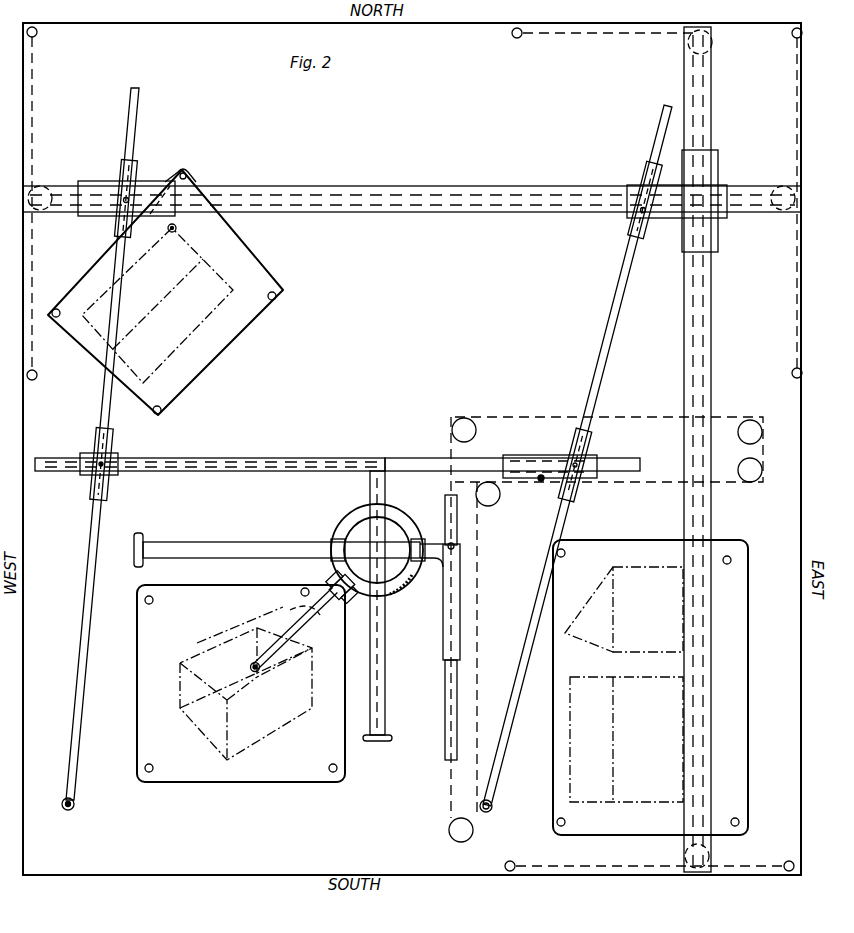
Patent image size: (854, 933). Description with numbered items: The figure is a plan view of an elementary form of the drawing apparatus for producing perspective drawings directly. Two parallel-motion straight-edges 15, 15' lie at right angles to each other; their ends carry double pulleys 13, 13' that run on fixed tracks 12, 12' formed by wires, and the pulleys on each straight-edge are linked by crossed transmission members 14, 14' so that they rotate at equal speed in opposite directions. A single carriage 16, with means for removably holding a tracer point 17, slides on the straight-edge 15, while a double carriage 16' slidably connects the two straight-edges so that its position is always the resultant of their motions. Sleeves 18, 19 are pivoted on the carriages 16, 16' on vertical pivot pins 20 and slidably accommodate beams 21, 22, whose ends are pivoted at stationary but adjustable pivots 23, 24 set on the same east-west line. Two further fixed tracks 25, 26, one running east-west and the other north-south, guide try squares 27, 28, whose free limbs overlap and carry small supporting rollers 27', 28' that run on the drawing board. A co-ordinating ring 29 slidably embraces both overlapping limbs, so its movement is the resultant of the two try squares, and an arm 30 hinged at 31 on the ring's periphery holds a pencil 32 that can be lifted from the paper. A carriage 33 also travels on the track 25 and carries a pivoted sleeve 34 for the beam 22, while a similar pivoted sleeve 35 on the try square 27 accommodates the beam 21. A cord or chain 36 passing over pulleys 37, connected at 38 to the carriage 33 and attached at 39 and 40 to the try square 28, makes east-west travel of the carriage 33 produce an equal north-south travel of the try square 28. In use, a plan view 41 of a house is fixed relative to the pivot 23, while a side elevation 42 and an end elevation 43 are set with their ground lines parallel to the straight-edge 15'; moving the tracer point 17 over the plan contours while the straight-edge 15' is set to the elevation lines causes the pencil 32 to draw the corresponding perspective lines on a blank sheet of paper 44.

The fixed track 12 is at (412, 449).
The fixed track 12' is at (649, 449).
The double pulley 13 is at (411, 196).
The double pulley 13' is at (723, 449).
The transmission member 14 is at (412, 218).
The transmission member 14' is at (725, 450).
The straight-edge 15 is at (412, 186).
The straight-edge 15' is at (717, 449).
The single carriage 16 is at (137, 180).
The double carriage 16' is at (672, 193).
The tracer point 17 is at (178, 226).
The sleeve 18 is at (140, 165).
The sleeve 19 is at (638, 176).
The vertical pivot pin 20 is at (124, 200).
The beam 21 is at (97, 404).
The beam 22 is at (606, 289).
The pivot 23 is at (75, 803).
The pivot 24 is at (493, 804).
The fixed track 25 is at (422, 456).
The fixed track 26 is at (446, 502).
The try square 27 is at (210, 451).
The supporting roller 27' is at (388, 618).
The try square 28 is at (280, 599).
The supporting roller 28' is at (138, 550).
The co-ordinating ring 29 is at (342, 520).
The arm 30 is at (305, 595).
The hinge 31 is at (336, 604).
The pencil 32 is at (250, 667).
The carriage 33 is at (543, 455).
The pivoted sleeve 34 is at (590, 452).
The pivoted sleeve 35 is at (111, 445).
The transmission member 36 is at (540, 417).
The pulley 37 is at (486, 484).
The connection point 38 is at (540, 481).
The attachment point 39 is at (456, 546).
The attachment point 40 is at (458, 666).
The plan view 41 is at (165, 292).
The side elevation 42 is at (650, 687).
The end elevation 43 is at (620, 595).
The sheet of paper 44 is at (241, 683).